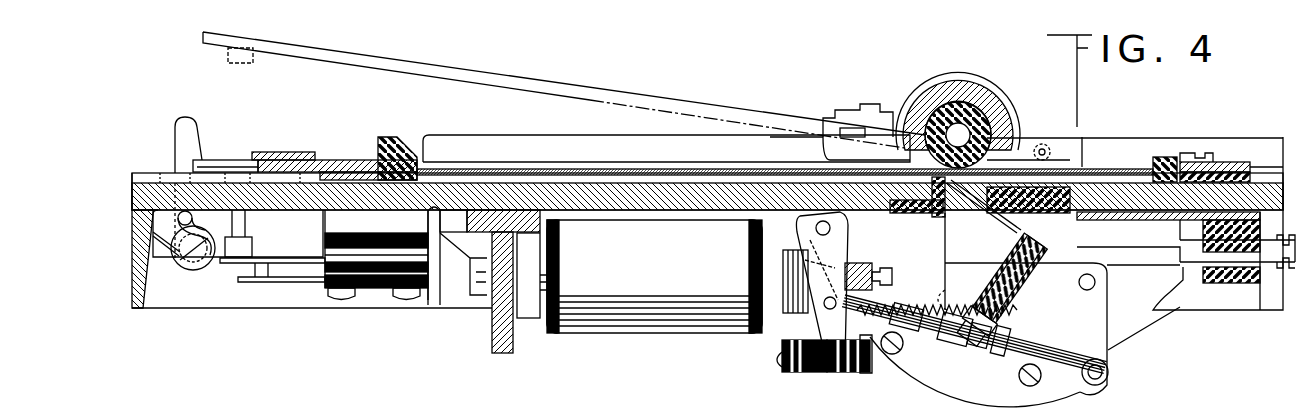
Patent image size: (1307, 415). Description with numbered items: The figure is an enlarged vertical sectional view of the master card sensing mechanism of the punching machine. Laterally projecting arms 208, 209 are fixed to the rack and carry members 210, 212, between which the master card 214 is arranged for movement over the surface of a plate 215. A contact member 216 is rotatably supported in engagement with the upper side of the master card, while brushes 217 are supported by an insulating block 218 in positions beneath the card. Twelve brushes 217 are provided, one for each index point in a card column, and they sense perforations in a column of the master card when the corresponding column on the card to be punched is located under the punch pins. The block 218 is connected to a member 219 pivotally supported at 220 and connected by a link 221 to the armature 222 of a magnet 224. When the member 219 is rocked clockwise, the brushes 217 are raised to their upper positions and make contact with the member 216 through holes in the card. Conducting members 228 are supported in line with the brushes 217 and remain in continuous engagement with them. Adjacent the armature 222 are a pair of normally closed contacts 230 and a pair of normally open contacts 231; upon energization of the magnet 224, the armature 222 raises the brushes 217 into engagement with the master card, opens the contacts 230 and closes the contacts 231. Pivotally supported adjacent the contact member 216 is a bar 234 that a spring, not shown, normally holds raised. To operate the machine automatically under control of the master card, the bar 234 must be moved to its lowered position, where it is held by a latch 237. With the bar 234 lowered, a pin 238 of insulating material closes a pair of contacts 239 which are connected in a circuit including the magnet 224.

The laterally projecting arm 208 is at (337, 160).
The laterally projecting arm 209 is at (1223, 157).
The member 210 is at (384, 136).
The member 212 is at (1172, 157).
The master card 214 is at (480, 172).
The plate 215 is at (600, 180).
The contact member 216 is at (930, 125).
The brushes 217 is at (993, 222).
The insulating block 218 is at (993, 250).
The member 219 is at (1100, 297).
The pivot 220 is at (1096, 282).
The link 221 is at (957, 347).
The armature 222 is at (828, 253).
The magnet 224 is at (660, 332).
The conducting members 228 is at (1187, 260).
The normally closed contacts 230 is at (828, 368).
The normally open contacts 231 is at (800, 368).
The bar 234 is at (510, 73).
The latch 237 is at (175, 134).
The pin 238 is at (247, 223).
The contacts 239 is at (238, 273).